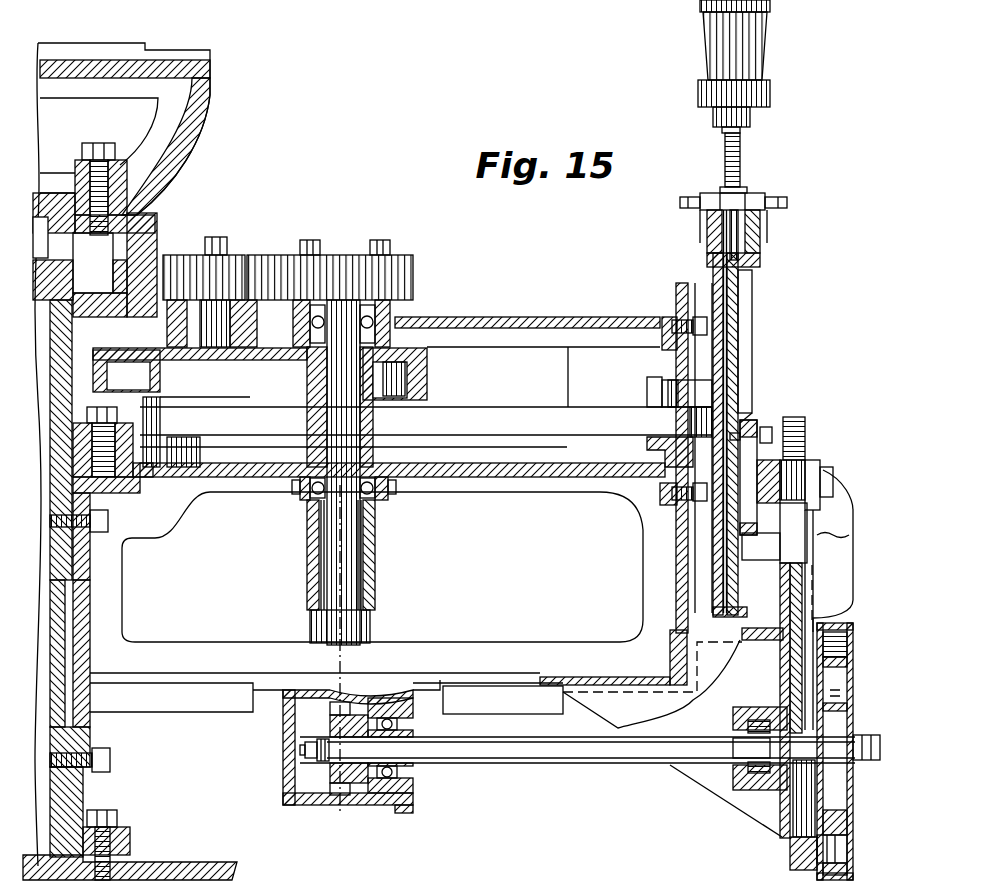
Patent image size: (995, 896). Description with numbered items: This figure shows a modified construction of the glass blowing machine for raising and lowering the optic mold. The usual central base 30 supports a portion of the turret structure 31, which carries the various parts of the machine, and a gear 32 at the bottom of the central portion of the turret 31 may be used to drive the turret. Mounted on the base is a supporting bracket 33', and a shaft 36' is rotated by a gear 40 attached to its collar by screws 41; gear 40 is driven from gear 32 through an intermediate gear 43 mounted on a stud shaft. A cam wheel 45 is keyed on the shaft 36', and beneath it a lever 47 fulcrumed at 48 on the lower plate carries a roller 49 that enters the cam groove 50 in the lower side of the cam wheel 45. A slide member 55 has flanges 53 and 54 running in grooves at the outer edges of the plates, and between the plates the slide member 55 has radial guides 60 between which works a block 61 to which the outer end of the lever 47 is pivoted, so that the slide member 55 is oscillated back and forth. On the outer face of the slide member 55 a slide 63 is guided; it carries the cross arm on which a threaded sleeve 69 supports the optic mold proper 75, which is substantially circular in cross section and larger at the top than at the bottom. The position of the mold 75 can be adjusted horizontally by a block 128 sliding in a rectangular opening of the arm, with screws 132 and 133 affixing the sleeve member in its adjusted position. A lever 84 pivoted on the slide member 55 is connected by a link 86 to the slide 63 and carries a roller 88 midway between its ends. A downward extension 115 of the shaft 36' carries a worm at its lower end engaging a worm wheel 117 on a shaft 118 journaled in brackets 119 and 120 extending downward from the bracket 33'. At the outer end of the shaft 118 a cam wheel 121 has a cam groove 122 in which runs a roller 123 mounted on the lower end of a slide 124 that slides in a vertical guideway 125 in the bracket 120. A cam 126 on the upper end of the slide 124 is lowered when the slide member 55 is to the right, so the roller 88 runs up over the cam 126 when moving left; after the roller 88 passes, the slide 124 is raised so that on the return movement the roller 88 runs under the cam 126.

The central base 30 is at (55, 630).
The turret structure 31 is at (205, 110).
The gear 32 is at (153, 230).
The supporting bracket 33' is at (382, 573).
The shaft 36' is at (361, 472).
The gear 40 is at (345, 258).
The screws 41 is at (388, 246).
The gear 43 is at (245, 255).
The cam wheel 45 is at (425, 388).
The lever 47 is at (503, 420).
The fulcrum 48 is at (160, 397).
The roller 49 is at (393, 380).
The cam groove 50 is at (126, 371).
The flange 53 is at (672, 482).
The flange 54 is at (668, 330).
The slide member 55 is at (693, 450).
The radial guides 60 is at (662, 396).
The block 61 is at (667, 383).
The slide 63 is at (737, 330).
The sleeve 69 is at (740, 158).
The mold proper 75 is at (752, 47).
The lever 84 is at (761, 547).
The link 86 is at (753, 423).
The roller 88 is at (790, 462).
The downward extension 115 is at (343, 541).
The worm wheel 117 is at (330, 772).
The shaft 118 is at (483, 748).
The bracket 119 is at (377, 807).
The bracket 120 is at (752, 805).
The cam wheel 121 is at (852, 820).
The cam groove 122 is at (830, 870).
The roller 123 is at (836, 845).
The slide 124 is at (838, 600).
The vertical guideway 125 is at (790, 645).
The cam 126 is at (805, 432).
The block 128 is at (750, 200).
The screw 132 is at (680, 200).
The screw 133 is at (790, 200).